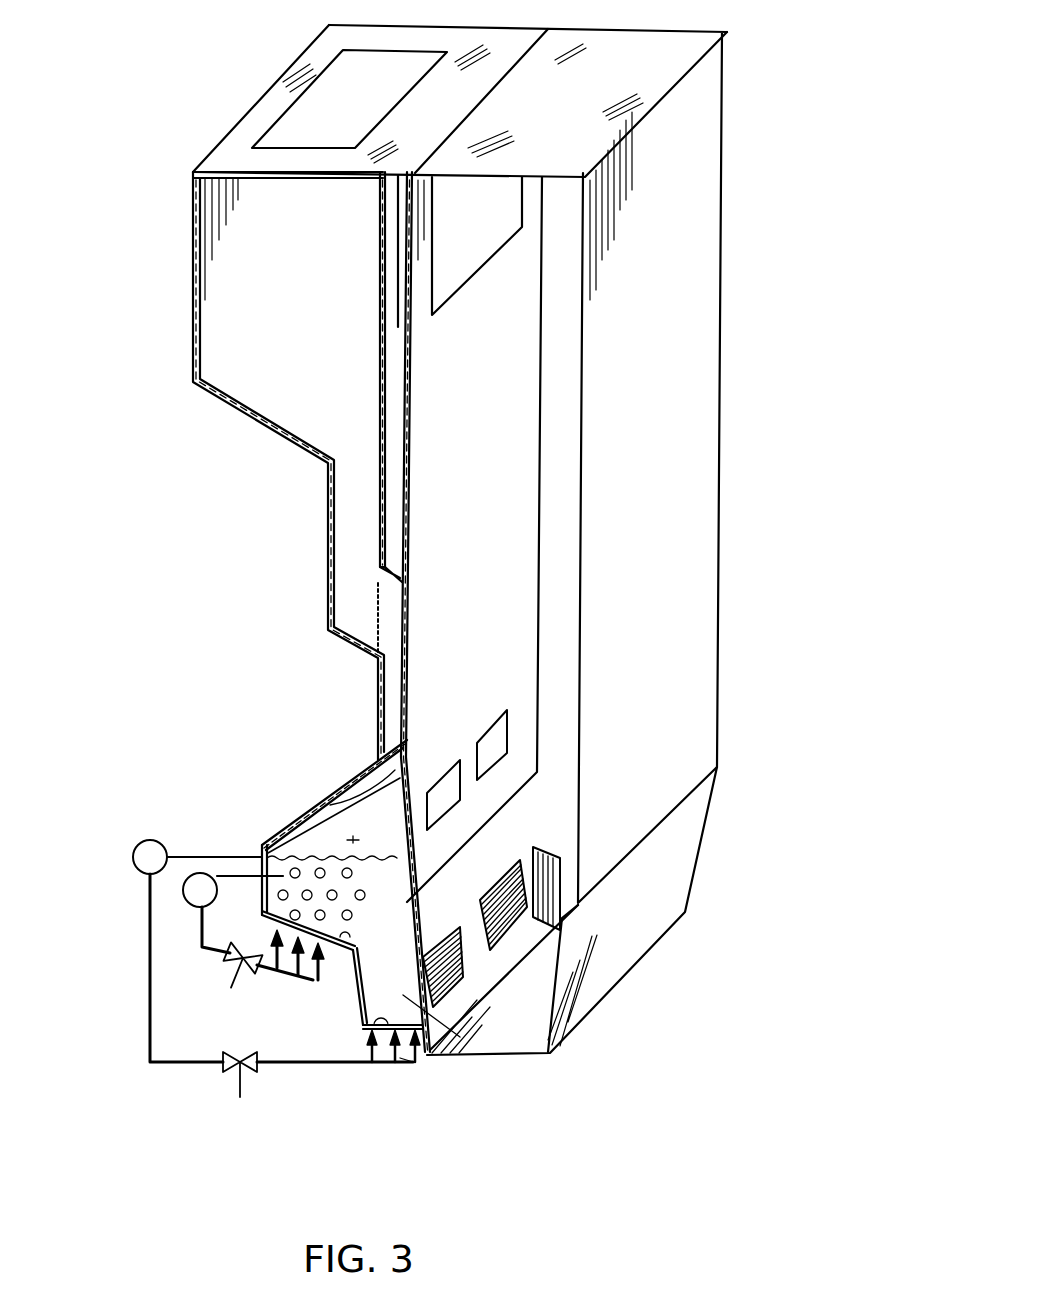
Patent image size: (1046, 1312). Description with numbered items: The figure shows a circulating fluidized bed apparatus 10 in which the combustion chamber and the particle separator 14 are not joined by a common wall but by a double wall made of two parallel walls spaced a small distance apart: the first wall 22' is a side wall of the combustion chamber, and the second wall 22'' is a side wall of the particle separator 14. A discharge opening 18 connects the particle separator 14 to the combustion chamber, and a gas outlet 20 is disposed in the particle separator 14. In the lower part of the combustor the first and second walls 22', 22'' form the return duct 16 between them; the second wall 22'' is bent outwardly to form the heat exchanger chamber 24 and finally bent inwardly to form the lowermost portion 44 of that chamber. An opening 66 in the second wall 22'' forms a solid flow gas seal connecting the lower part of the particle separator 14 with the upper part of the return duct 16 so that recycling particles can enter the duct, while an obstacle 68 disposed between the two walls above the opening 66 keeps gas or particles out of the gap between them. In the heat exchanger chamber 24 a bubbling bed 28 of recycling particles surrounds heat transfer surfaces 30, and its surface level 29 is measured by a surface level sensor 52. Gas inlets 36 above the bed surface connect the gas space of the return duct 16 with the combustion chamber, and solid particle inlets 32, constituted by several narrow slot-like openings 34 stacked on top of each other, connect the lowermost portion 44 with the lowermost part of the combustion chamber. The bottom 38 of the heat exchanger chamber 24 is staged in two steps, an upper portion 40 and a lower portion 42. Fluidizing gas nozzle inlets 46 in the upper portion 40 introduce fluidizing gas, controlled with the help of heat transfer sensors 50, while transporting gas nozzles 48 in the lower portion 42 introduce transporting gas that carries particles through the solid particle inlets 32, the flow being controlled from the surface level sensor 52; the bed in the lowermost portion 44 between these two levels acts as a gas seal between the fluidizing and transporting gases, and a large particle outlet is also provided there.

The apparatus housing 10 is at (752, 417).
The particle separator 14 is at (240, 305).
The return duct 16 is at (227, 724).
The discharge opening 18 is at (465, 260).
The gas outlet 20 is at (335, 108).
The first wall 22' is at (457, 612).
The second wall 22'' is at (285, 373).
The heat exchanger chamber 24 is at (312, 835).
The bubbling bed 28 is at (323, 870).
The surface level 29 is at (312, 835).
The heat transfer surfaces 30 is at (350, 838).
The solid particle inlets 32 is at (512, 862).
The slot-like openings 34 is at (513, 887).
The gas inlets 36 is at (490, 730).
The bottom 38 is at (357, 942).
The upper portion 40 is at (353, 995).
The lower portion 42 is at (360, 1030).
The lowermost portion 44 is at (420, 1005).
The fluidizing gas nozzle inlets 46 is at (277, 965).
The transporting gas nozzles 48 is at (403, 1057).
The sensors 50 is at (183, 890).
The surface level sensor 52 is at (150, 840).
The opening 66 is at (373, 630).
The obstacle 68 is at (395, 567).